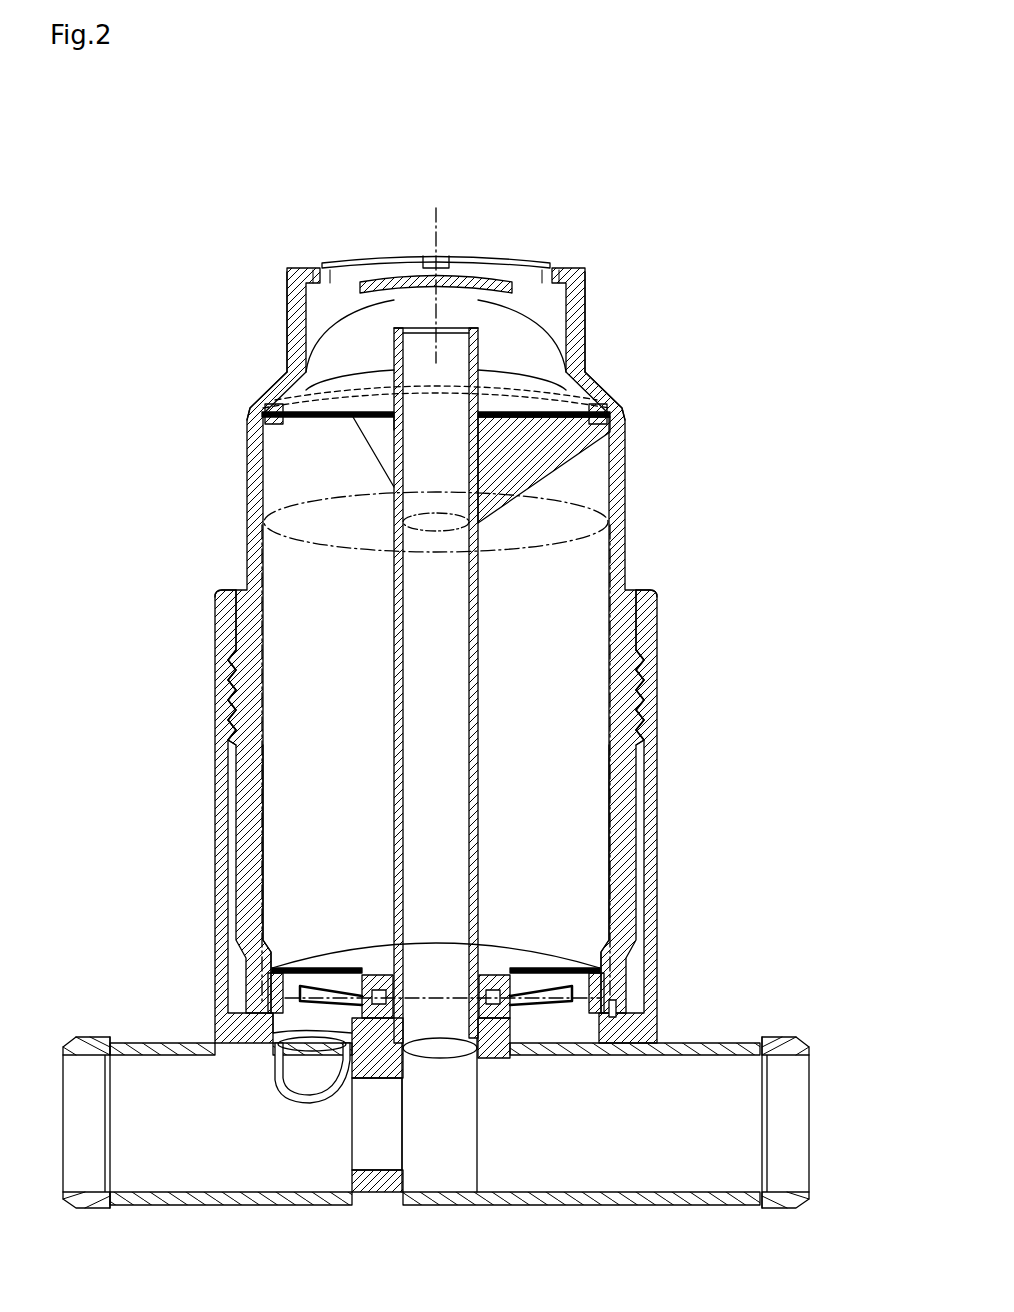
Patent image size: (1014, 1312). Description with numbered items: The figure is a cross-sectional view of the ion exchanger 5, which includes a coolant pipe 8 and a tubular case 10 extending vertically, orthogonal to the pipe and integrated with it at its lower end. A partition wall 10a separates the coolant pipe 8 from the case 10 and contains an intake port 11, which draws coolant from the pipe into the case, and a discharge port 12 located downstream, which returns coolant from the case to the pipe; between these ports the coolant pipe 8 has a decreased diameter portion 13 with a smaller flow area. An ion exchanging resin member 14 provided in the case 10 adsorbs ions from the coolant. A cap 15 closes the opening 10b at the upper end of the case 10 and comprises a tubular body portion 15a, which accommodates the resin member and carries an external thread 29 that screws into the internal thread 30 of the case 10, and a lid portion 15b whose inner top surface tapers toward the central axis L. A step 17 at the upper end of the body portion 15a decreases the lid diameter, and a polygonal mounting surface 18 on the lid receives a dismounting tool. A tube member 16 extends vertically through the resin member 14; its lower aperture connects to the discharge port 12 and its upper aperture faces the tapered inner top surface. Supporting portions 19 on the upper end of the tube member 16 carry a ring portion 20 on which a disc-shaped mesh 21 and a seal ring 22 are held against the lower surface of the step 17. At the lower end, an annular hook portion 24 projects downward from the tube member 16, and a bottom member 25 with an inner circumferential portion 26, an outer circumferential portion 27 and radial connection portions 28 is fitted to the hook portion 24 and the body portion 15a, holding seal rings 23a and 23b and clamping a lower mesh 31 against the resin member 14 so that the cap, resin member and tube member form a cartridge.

The ion exchanger 5 is at (666, 254).
The coolant pipe 8 is at (160, 1043).
The case 10 is at (216, 818).
The partition wall 10a is at (243, 1042).
The opening 10b is at (651, 592).
The intake port 11 is at (300, 1050).
The discharge port 12 is at (440, 1055).
The decreased diameter portion 13 is at (352, 1182).
The ion exchanging resin member 14 is at (248, 508).
The cap 15 is at (226, 418).
The body portion 15a is at (635, 808).
The lid portion 15b is at (402, 273).
The tube member 16 is at (478, 777).
The step 17 is at (588, 373).
The polygonal mounting surface 18 is at (287, 300).
The supporting portions 19 is at (352, 425).
The ring portion 20 is at (288, 425).
The mesh 21 is at (517, 408).
The seal ring 22 is at (270, 407).
The seal ring 23a is at (388, 1005).
The seal ring 23b is at (615, 1018).
The hook portion 24 is at (383, 990).
The bottom member 25 is at (470, 1010).
The inner circumferential portion 26 is at (512, 975).
The outer circumferential portion 27 is at (590, 973).
The connection portion 28 is at (322, 992).
The external thread 29 is at (645, 667).
The internal thread 30 is at (636, 707).
The mesh 31 is at (355, 955).
The central axis L is at (437, 227).